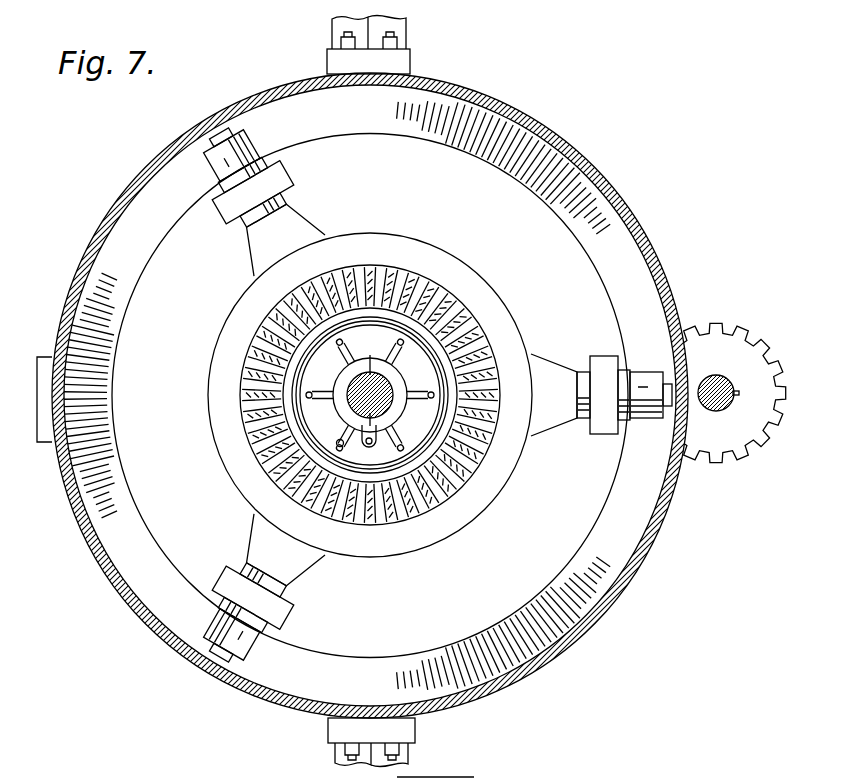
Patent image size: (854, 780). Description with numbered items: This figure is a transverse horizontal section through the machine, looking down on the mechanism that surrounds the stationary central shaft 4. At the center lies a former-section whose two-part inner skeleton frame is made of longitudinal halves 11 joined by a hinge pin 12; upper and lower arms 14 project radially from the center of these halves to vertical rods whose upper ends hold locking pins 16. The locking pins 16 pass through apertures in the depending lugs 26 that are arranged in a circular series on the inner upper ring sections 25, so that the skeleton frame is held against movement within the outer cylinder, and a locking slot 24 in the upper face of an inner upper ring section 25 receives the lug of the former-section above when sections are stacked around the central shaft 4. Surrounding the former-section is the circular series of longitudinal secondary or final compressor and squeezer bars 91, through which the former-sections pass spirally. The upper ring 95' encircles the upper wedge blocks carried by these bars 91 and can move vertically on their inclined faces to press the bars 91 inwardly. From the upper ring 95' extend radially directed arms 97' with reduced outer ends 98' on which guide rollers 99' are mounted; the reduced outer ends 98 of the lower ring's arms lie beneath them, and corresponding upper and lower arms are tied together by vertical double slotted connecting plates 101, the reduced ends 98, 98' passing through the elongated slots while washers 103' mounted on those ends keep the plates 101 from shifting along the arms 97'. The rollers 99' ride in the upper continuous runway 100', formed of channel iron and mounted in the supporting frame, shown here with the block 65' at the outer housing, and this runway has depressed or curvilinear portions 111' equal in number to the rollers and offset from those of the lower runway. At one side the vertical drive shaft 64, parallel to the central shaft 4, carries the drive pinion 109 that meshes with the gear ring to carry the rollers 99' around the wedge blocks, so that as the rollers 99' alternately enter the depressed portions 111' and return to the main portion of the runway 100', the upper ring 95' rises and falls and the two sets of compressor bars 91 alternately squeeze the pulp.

The stationary central shaft 4 is at (470, 310).
The longitudinal halves of the two-part inner skeleton frame 11 is at (344, 377).
The hinge pin 12 is at (365, 442).
The upper and lower arms 14 is at (390, 348).
The locking pins 16 is at (338, 439).
The locking slot 24 is at (467, 485).
The inner upper ring sections 25 is at (420, 395).
The depending lugs 26 is at (430, 392).
The vertical drive shaft 64 is at (726, 380).
The terminal block 65' is at (346, 742).
The secondary or final compressor and squeezer bars 91 is at (407, 266).
The upper ring 95' is at (379, 395).
The radially directed arms of the upper ring 97' is at (404, 387).
The reduced outer ends of the lower arms 98 is at (654, 421).
The reduced outer ends of the upper arms 98' is at (204, 400).
The guide rollers 99' is at (397, 406).
The upper continuous runway 100' is at (362, 397).
The vertical double slotted connecting plates 101 is at (606, 421).
The washers 103' is at (408, 372).
The drive pinion 109 is at (753, 360).
The depressed or curvilinear portions of the upper runway 111' is at (346, 395).